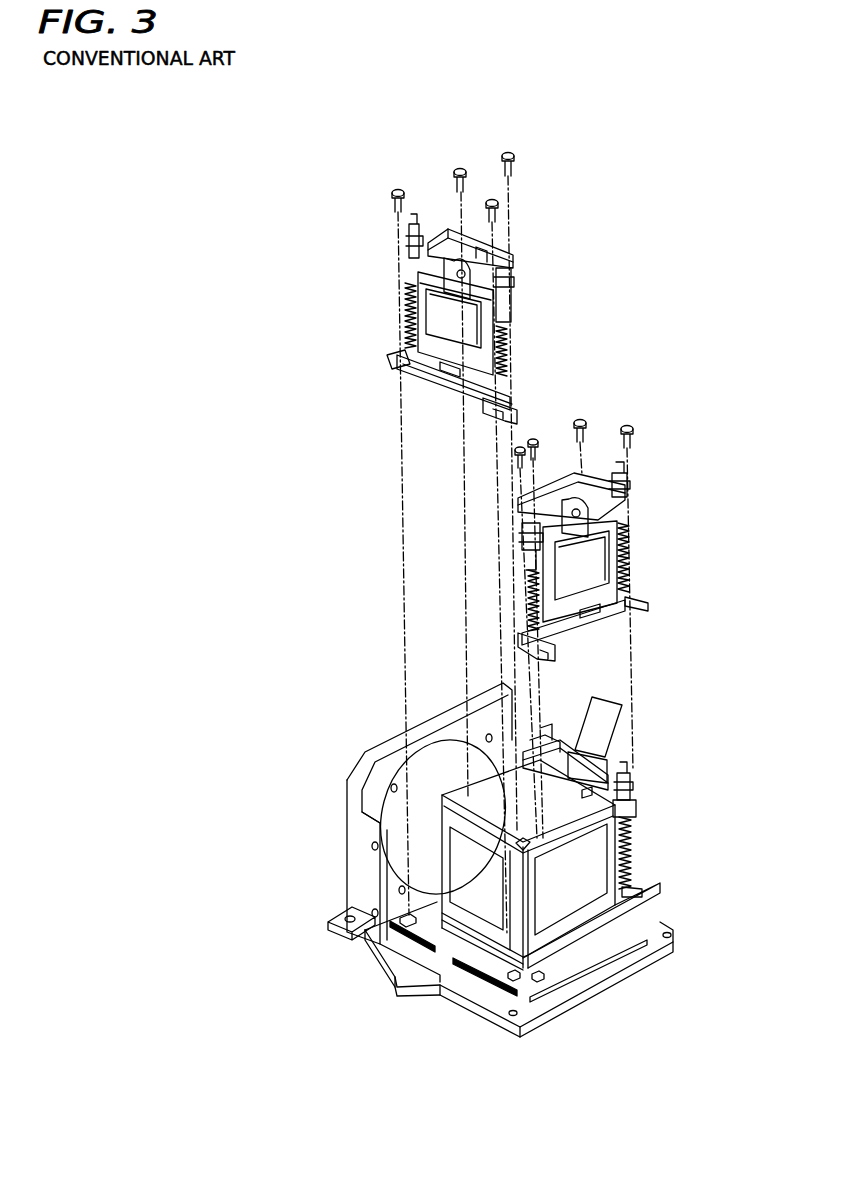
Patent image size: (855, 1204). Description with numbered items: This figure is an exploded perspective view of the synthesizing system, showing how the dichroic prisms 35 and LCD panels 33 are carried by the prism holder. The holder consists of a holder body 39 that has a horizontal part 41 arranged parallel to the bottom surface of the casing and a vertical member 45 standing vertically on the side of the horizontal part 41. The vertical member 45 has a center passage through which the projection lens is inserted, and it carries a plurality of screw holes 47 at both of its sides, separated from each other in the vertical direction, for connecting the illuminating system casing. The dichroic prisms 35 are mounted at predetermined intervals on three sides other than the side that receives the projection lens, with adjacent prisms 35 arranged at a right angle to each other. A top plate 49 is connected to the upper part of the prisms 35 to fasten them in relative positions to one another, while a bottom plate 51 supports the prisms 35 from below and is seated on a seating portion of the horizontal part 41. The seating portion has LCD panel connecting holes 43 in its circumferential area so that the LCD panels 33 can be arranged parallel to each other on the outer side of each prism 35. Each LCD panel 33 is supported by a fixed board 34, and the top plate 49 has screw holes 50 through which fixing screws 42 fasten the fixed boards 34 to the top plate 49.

The LCD panel 33 is at (440, 316).
The fixed board 34 is at (516, 262).
The dichroic prism 35 is at (567, 900).
The holder body 39 is at (335, 846).
The horizontal part 41 is at (483, 998).
The fixing screw 42 is at (628, 425).
The LCD panel connecting hole 43 is at (510, 973).
The vertical member 45 is at (352, 797).
The screw hole 47 is at (373, 850).
The top plate 49 is at (605, 760).
The screw hole 50 is at (520, 826).
The bottom plate 51 is at (513, 913).